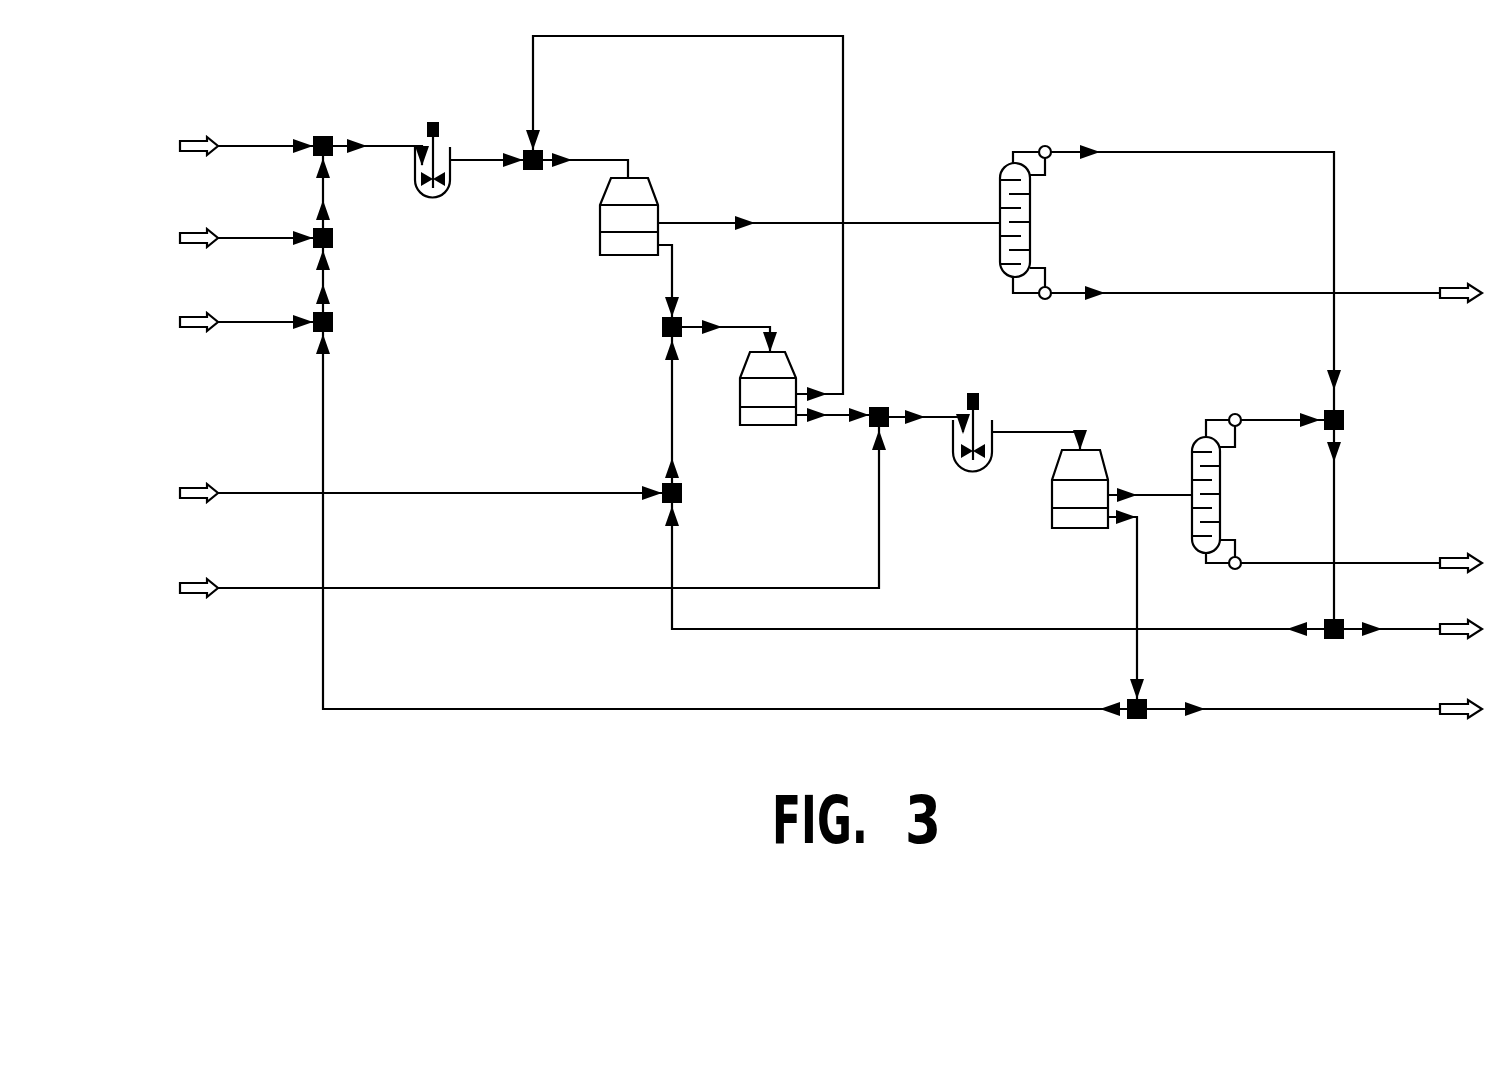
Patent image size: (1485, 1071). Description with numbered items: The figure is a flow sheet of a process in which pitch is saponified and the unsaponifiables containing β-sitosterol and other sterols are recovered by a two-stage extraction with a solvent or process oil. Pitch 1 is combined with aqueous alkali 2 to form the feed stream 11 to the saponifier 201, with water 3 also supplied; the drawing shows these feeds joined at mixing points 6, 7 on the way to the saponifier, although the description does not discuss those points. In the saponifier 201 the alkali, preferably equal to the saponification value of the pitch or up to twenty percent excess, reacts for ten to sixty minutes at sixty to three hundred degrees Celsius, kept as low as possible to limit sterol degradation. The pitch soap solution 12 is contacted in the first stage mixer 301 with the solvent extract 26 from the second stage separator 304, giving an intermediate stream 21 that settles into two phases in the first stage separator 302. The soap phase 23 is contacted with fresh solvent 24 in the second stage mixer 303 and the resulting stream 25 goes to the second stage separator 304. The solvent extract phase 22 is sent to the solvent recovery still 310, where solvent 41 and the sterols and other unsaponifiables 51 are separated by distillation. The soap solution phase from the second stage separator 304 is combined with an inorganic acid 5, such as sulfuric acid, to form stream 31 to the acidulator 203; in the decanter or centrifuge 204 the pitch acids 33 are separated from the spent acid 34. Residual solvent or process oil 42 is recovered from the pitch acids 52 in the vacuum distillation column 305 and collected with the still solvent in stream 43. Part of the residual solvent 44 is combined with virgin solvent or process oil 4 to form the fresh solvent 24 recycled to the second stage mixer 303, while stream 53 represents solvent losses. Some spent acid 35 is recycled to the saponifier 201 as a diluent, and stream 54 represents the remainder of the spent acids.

The pitch stream 1 is at (241, 160).
The aqueous alkali stream 2 is at (241, 253).
The water stream 3 is at (251, 336).
The virgin solvent or process oil stream 4 is at (416, 508).
The inorganic acid stream 5 is at (528, 527).
The mixing point 6 is at (342, 259).
The mixing point 7 is at (342, 167).
The saponifier feed stream 11 is at (381, 137).
The pitch soap solution stream 12 is at (486, 144).
The mixed stream to separator 21 is at (585, 150).
The solvent extract phase stream 22 is at (829, 209).
The soap phase stream 23 is at (748, 354).
The fresh solvent stream 24 is at (655, 420).
The mixed stream to second separator 25 is at (729, 309).
The second stage solvent extract stream 26 is at (684, 218).
The acidulator feed stream 31 is at (978, 414).
The pitch acids stream 33 is at (1150, 480).
The spent acid stream 34 is at (1119, 604).
The recycled spent acid stream 35 is at (721, 436).
The recovered solvent stream 41 is at (1196, 277).
The residual solvent or process oil stream 42 is at (1292, 436).
The collected solvent or process oil stream 43 is at (1353, 524).
The recycled residual solvent stream 44 is at (974, 581).
The sterols and unsaponifiables stream 51 is at (1266, 280).
The pitch acids product stream 52 is at (1361, 547).
The solvent losses stream 53 is at (1403, 643).
The remaining spent acids stream 54 is at (1304, 723).
The saponifier 201 is at (418, 197).
The acidulator 203 is at (950, 463).
The decanter or centrifuge 204 is at (1040, 517).
The first stage mixer 301 is at (520, 171).
The first stage separator 302 is at (597, 225).
The second stage mixer 303 is at (660, 333).
The second stage separator 304 is at (735, 400).
The vacuum distillation column 305 is at (1226, 495).
The solvent recovery still 310 is at (1020, 212).